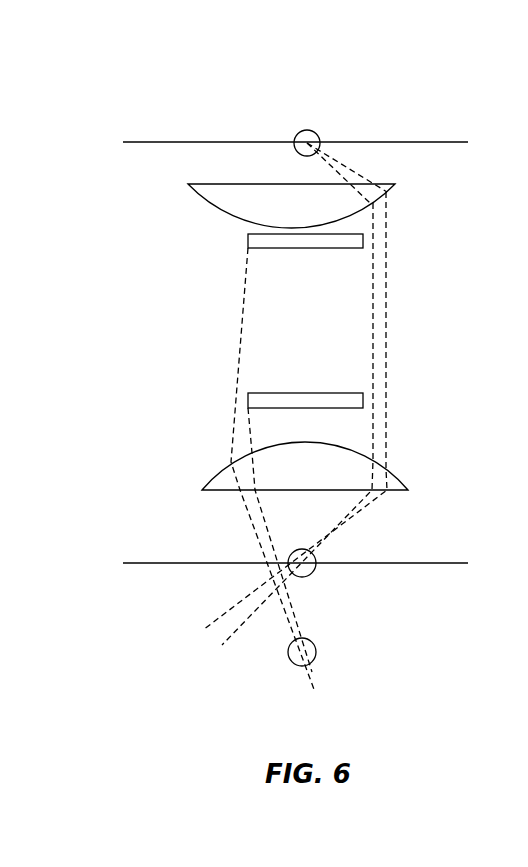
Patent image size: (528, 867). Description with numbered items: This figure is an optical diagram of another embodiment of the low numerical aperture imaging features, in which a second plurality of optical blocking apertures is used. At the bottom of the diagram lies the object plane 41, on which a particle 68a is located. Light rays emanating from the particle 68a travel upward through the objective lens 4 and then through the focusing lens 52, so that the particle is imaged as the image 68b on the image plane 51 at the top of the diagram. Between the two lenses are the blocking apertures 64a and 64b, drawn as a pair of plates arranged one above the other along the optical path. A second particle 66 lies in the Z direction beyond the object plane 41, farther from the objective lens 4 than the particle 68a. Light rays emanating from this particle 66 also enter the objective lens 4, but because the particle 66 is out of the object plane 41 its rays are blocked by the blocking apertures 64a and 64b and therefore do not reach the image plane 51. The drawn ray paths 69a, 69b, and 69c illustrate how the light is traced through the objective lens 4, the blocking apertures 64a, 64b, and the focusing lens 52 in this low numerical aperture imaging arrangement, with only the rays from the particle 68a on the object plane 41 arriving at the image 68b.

The objective lens 4 is at (397, 477).
The object plane 41 is at (430, 563).
The image plane 51 is at (427, 142).
The focusing lens 52 is at (208, 183).
The blocking aperture 64a is at (273, 393).
The blocking aperture 64b is at (278, 248).
The particle 66 is at (320, 655).
The particle 68a is at (313, 573).
The image 68b is at (307, 129).
The light ray 69a is at (238, 323).
The light ray 69b is at (373, 355).
The light ray 69c is at (387, 308).